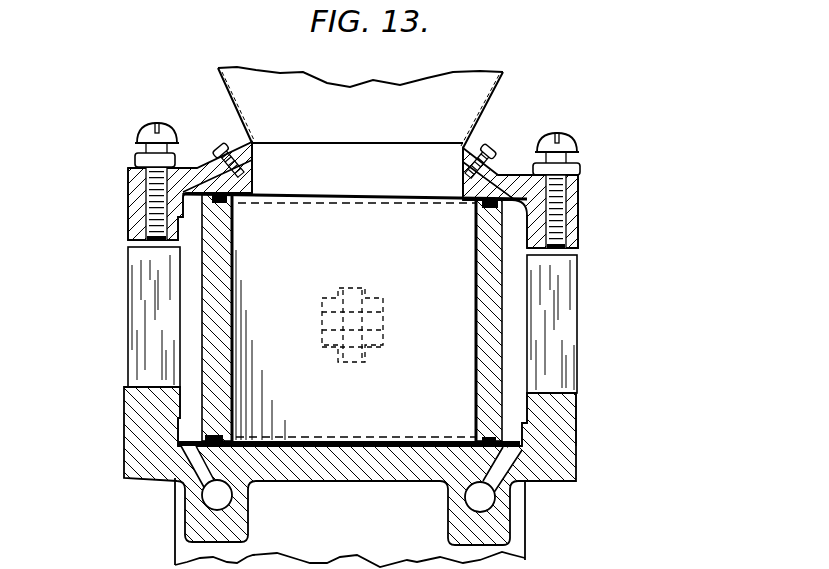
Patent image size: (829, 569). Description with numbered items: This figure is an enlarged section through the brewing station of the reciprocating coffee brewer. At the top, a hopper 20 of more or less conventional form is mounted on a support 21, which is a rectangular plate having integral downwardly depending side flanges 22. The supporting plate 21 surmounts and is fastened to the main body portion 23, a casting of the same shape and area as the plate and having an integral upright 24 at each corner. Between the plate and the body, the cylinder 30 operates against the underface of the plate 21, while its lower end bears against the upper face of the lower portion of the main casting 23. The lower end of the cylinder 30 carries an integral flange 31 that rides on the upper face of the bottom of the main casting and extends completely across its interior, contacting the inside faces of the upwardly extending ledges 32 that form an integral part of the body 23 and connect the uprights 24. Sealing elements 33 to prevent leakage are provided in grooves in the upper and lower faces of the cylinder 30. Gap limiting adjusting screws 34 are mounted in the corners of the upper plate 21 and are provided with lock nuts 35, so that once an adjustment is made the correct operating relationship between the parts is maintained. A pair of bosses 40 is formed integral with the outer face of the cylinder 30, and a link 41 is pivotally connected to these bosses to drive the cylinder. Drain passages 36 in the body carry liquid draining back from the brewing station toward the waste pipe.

The hopper 20 is at (473, 129).
The support 21 is at (196, 160).
The side flanges 22 is at (132, 220).
The main body portion 23 is at (122, 462).
The upright 24 is at (134, 313).
The cylinder 30 is at (487, 383).
The flange 31 is at (178, 442).
The ledges 32 is at (170, 420).
The sealing elements 33 is at (228, 206).
The gap limiting adjusting screws 34 is at (145, 132).
The lock nuts 35 is at (136, 157).
The drain passages 36 is at (212, 497).
The bosses 40 is at (383, 298).
The link 41 is at (383, 322).